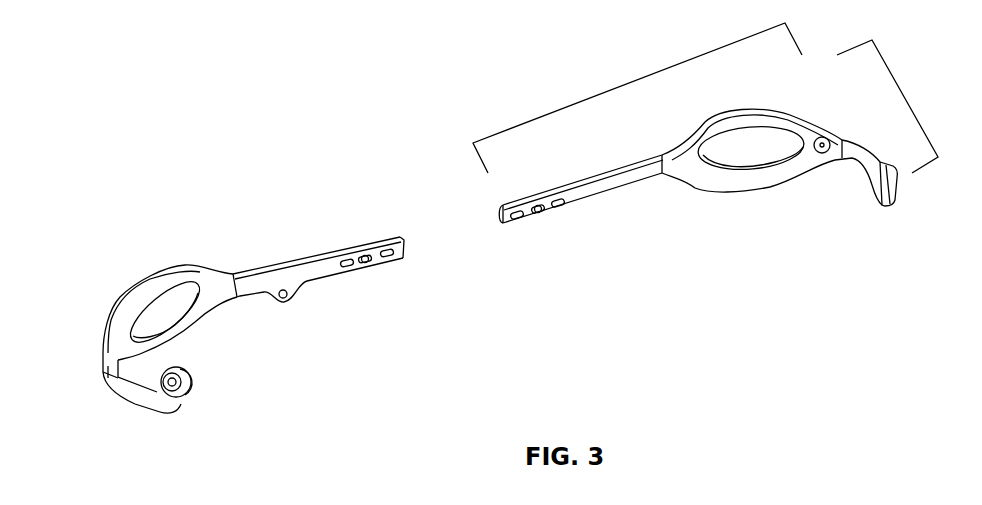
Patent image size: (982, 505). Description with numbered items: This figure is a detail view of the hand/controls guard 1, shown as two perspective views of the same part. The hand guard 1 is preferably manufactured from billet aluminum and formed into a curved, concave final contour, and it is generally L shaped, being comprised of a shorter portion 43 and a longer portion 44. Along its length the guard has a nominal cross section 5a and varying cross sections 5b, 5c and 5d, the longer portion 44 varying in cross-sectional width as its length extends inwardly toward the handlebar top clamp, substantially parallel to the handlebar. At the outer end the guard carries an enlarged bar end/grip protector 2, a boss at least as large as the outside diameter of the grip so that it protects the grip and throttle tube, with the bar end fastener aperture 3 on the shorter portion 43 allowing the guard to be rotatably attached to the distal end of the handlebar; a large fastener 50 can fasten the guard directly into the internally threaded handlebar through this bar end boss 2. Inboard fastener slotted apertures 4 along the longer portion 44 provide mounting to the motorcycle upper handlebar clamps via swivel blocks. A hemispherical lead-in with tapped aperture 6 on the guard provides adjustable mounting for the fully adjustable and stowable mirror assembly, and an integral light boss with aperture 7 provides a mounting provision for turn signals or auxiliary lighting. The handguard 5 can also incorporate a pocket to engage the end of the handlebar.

The hand/controls guard 1 is at (163, 257).
The enlarged bar end/grip protector 2 is at (196, 397).
The bar end fastener aperture 3 is at (172, 387).
The inboard fastener slotted apertures 4 is at (363, 235).
The handguard 5 is at (147, 412).
The nominal cross section 5a is at (577, 210).
The varying cross section 5b is at (92, 363).
The varying cross section 5c is at (282, 258).
The varying cross section 5d is at (733, 195).
The hemispherical lead-in with tapped aperture 6 is at (818, 158).
The integral light boss with aperture 7 is at (293, 300).
The shorter portion 43 is at (889, 106).
The longer portion 44 is at (637, 98).
The large fastener 50 is at (612, 202).